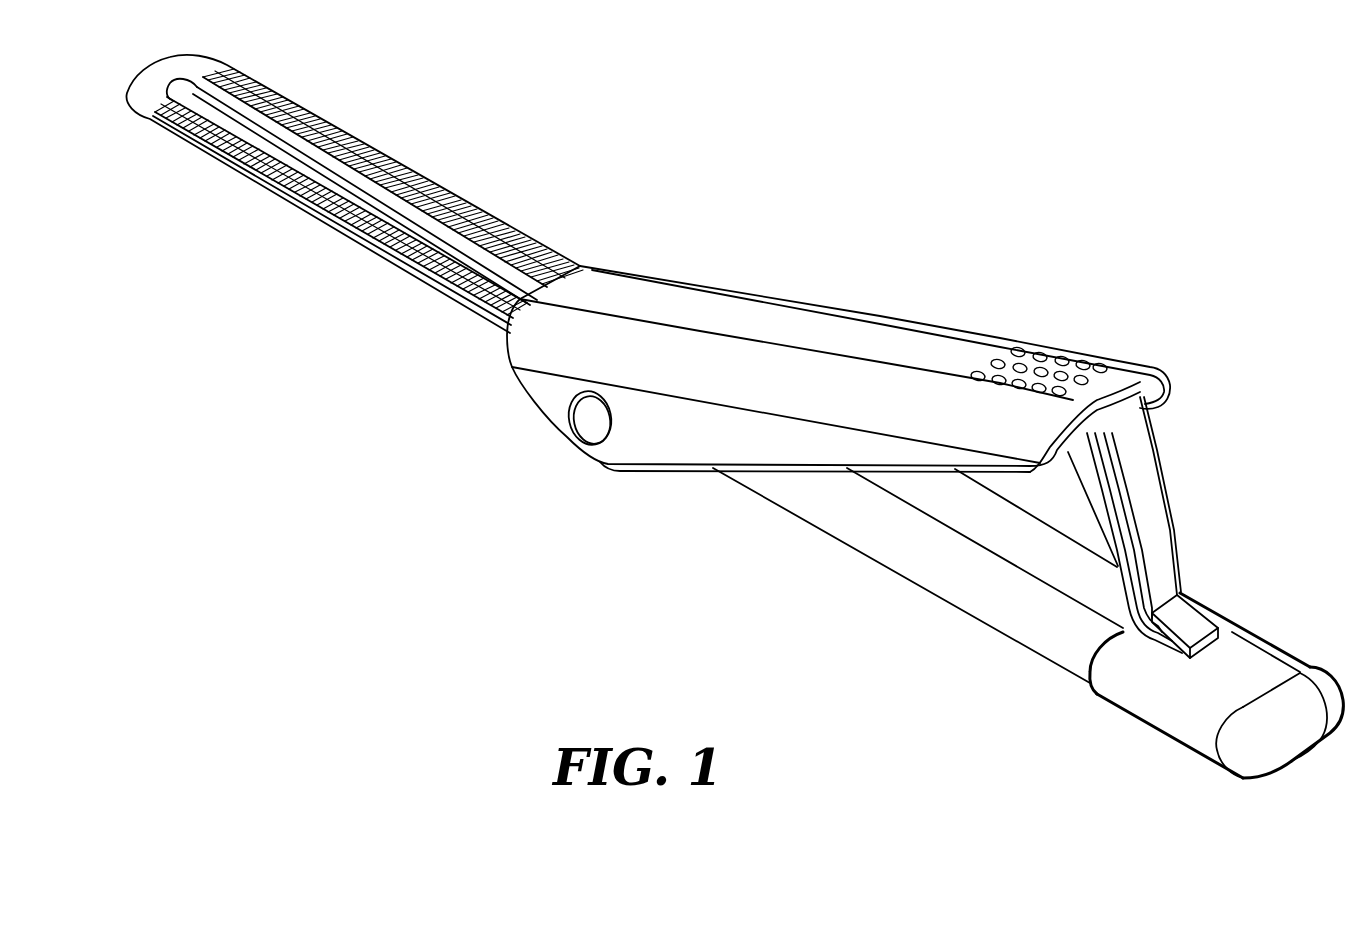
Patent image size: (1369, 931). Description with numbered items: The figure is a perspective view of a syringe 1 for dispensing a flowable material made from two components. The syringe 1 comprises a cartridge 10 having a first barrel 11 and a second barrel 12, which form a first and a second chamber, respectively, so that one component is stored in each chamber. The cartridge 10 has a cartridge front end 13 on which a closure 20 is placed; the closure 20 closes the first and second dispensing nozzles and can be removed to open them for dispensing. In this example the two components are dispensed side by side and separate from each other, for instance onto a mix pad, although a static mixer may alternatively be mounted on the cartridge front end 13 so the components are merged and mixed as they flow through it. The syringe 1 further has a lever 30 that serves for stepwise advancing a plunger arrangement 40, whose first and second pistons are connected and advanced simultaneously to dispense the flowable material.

The syringe 1 is at (845, 247).
The plunger arrangement 40 is at (243, 133).
The lever 30 is at (932, 348).
The cartridge 10 is at (827, 538).
The first barrel 11 is at (1040, 628).
The second barrel 12 is at (1010, 556).
The cartridge front end 13 is at (1158, 769).
The closure 20 is at (1120, 713).